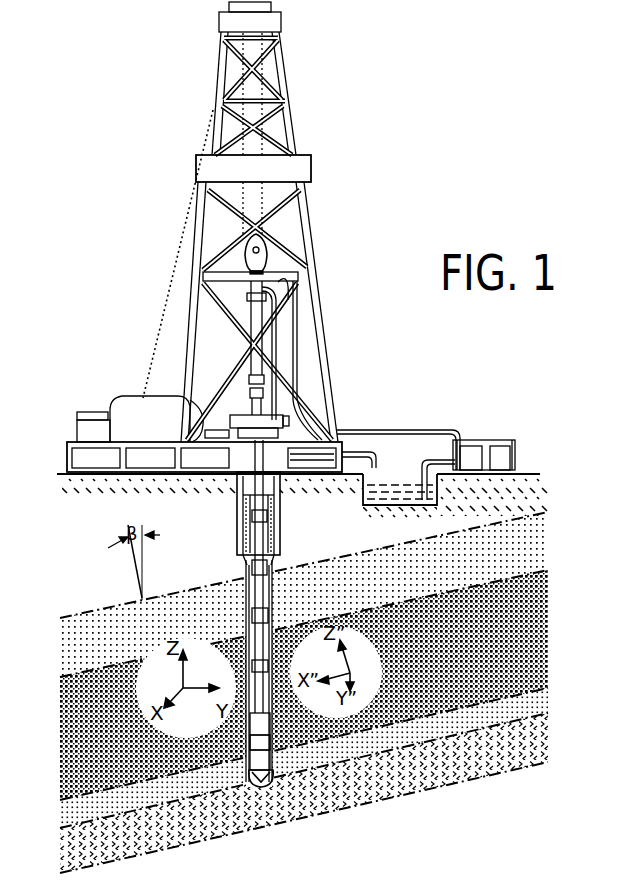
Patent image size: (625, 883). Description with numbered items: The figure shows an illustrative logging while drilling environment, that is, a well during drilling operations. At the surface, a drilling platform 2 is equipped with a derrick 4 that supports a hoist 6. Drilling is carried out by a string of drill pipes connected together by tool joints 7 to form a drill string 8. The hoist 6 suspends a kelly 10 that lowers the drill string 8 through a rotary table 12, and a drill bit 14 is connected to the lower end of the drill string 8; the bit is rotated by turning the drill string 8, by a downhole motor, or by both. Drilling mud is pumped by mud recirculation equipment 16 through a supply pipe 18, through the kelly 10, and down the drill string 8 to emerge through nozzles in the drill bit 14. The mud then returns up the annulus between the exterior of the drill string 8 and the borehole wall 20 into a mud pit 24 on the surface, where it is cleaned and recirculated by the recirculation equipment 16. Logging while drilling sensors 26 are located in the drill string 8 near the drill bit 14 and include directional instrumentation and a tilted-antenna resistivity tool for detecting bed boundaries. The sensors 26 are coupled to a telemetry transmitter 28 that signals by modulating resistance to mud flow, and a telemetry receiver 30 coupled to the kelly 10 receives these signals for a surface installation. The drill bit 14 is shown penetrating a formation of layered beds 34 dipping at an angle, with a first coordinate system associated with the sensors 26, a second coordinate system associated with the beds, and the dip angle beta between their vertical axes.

The drilling platform 2 is at (67, 445).
The derrick 4 is at (293, 127).
The hoist 6 is at (268, 248).
The tool joints 7 is at (250, 567).
The drill string 8 is at (247, 581).
The kelly 10 is at (257, 313).
The rotary table 12 is at (273, 408).
The drill bit 14 is at (273, 773).
The mud recirculation equipment 16 is at (465, 446).
The supply pipe 18 is at (410, 430).
The borehole wall 20 is at (270, 568).
The mud pit 24 is at (445, 503).
The logging while drilling sensors 26 is at (252, 748).
The telemetry transmitter 28 is at (265, 726).
The telemetry receiver 30 is at (265, 378).
The layered beds 34 is at (578, 752).